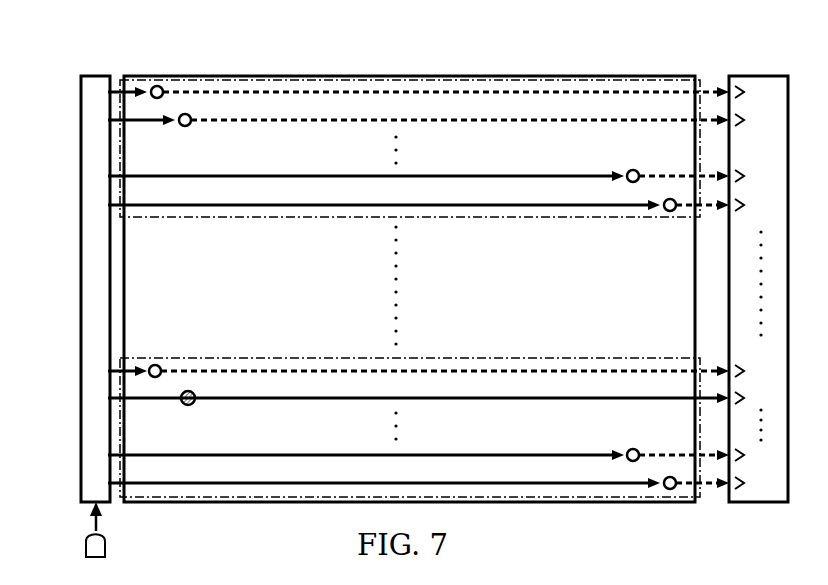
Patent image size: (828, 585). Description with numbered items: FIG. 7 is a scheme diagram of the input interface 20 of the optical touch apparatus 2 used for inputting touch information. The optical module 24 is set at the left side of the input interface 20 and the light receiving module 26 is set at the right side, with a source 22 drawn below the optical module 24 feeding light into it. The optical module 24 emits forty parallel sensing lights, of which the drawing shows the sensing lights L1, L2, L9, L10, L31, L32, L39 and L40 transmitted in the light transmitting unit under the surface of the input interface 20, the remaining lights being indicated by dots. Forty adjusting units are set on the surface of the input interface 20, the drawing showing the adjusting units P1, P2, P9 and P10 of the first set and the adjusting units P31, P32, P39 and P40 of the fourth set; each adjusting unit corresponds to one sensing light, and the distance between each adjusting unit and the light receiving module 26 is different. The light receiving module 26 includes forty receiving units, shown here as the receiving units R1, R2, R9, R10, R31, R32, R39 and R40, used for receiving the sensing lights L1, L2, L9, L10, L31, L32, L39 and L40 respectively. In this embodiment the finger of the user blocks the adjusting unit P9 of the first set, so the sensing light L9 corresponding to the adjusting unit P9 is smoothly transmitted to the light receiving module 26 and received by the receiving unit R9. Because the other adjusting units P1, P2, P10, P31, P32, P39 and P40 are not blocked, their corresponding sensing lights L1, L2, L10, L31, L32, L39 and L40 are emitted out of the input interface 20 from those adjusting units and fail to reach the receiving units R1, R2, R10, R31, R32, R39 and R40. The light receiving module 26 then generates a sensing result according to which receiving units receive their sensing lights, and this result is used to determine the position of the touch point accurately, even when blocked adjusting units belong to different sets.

The optical touch apparatus 2 is at (532, 46).
The input interface 20 is at (315, 76).
The light source 22 is at (88, 524).
The optical module 24 is at (94, 76).
The light receiving module 26 is at (741, 76).
The sensing light L40 is at (128, 90).
The sensing light L39 is at (152, 122).
The sensing light L32 is at (348, 176).
The sensing light L31 is at (280, 205).
The sensing light L10 is at (132, 369).
The sensing light L9 is at (272, 398).
The sensing light L2 is at (350, 455).
The sensing light L1 is at (282, 483).
The adjusting unit P40 is at (160, 86).
The adjusting unit P39 is at (190, 114).
The adjusting unit P32 is at (640, 170).
The adjusting unit P31 is at (671, 214).
The adjusting unit P10 is at (162, 366).
The adjusting unit P9 is at (196, 396).
The adjusting unit P2 is at (640, 449).
The adjusting unit P1 is at (671, 492).
The receiving unit R40 is at (756, 92).
The receiving unit R39 is at (756, 120).
The receiving unit R32 is at (756, 176).
The receiving unit R31 is at (756, 205).
The receiving unit R10 is at (756, 371).
The receiving unit R9 is at (752, 398).
The receiving unit R2 is at (752, 455).
The receiving unit R1 is at (752, 483).